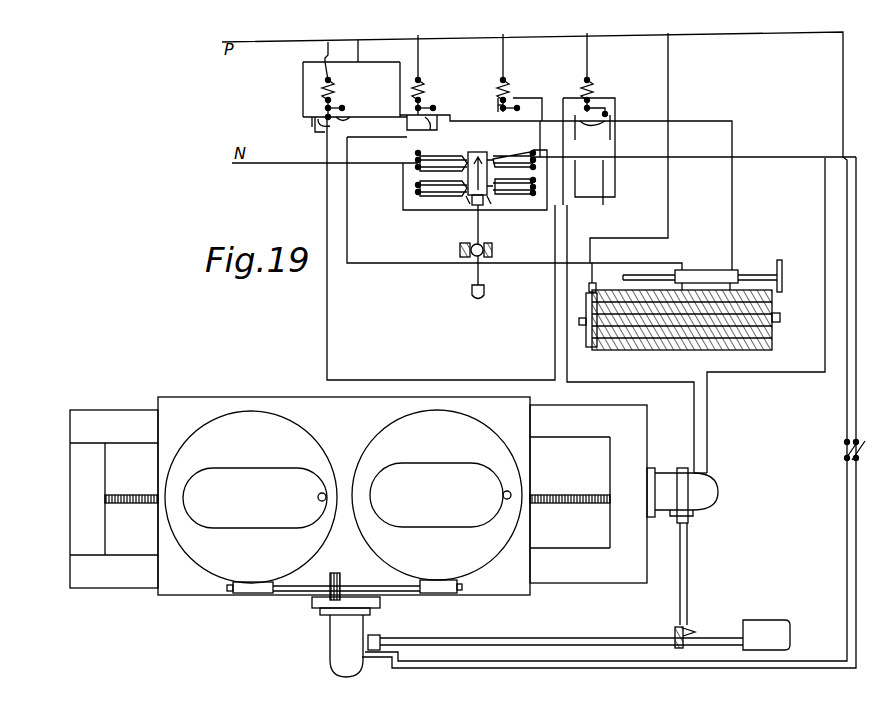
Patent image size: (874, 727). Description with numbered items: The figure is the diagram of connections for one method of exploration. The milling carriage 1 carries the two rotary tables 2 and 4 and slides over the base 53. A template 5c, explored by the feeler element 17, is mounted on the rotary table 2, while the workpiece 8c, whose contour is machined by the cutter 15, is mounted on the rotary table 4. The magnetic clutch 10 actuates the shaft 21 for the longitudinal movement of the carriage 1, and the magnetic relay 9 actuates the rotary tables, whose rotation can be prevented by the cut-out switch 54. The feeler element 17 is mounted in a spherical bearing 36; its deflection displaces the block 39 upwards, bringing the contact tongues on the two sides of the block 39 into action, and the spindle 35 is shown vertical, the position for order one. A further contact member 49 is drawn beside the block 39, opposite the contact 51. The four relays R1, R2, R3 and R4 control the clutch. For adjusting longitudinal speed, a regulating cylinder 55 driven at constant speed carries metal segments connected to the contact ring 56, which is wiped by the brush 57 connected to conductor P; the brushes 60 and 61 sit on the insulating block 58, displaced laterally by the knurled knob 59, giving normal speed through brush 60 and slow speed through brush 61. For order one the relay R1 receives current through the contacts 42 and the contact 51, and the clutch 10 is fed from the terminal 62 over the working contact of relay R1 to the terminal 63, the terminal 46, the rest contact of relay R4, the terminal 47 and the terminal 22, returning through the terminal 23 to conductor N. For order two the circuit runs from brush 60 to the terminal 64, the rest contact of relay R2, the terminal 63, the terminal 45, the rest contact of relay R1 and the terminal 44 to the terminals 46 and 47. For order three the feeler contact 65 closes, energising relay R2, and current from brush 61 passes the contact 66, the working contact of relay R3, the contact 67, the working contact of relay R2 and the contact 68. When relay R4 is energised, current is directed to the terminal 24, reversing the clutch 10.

The milling carriage 1 is at (187, 404).
The rotary table 2 is at (398, 428).
The rotary table 4 is at (226, 421).
The template 5c is at (437, 470).
The workpiece 8c is at (252, 528).
The magnetic relay 9 is at (330, 627).
The magnetic clutch 10 is at (712, 508).
The cutter 15 is at (324, 492).
The feeler element 17 is at (478, 301).
The shaft 21 is at (584, 506).
The terminal 22 is at (696, 471).
The terminal 23 is at (719, 488).
The terminal 24 is at (708, 471).
The spindle 35 is at (470, 263).
The spherical bearing 36 is at (492, 250).
The block 39 is at (480, 152).
The contacts 42 is at (475, 180).
The terminal 44 is at (315, 125).
The terminal 45 is at (343, 118).
The terminal 46 is at (592, 134).
The terminal 47 is at (607, 113).
The lever 49 is at (465, 200).
The contact 51 is at (496, 196).
The base 53 is at (80, 492).
The cut-out switch 54 is at (847, 452).
The regulating cylinder 55 is at (766, 340).
The contact ring 56 is at (590, 310).
The brush 57 is at (590, 291).
The insulating block 58 is at (700, 274).
The knurled knob 59 is at (785, 278).
The brush 60 is at (641, 278).
The brush 61 is at (748, 278).
The terminal 62 is at (344, 107).
The terminal 63 is at (326, 101).
The terminal 64 is at (442, 162).
The feeler contact 65 is at (466, 160).
The contact 66 is at (518, 107).
The contact 67 is at (502, 101).
The contact 68 is at (434, 107).
The relay R1 is at (333, 97).
The relay R2 is at (425, 82).
The relay R3 is at (519, 77).
The relay R4 is at (589, 115).